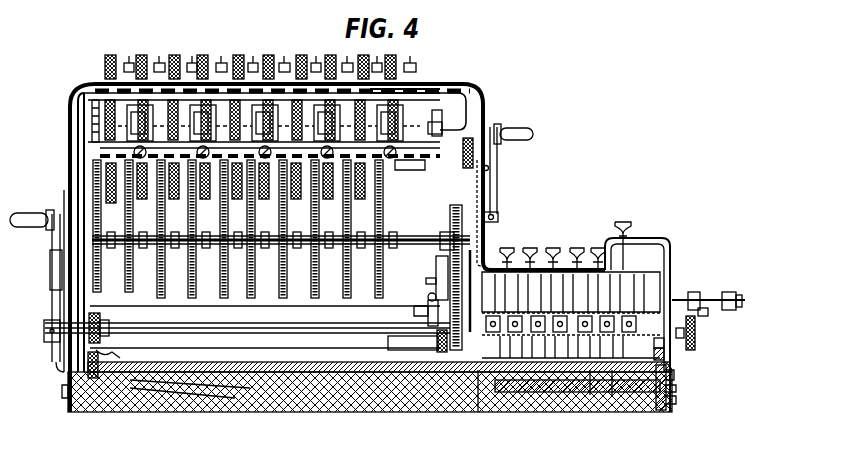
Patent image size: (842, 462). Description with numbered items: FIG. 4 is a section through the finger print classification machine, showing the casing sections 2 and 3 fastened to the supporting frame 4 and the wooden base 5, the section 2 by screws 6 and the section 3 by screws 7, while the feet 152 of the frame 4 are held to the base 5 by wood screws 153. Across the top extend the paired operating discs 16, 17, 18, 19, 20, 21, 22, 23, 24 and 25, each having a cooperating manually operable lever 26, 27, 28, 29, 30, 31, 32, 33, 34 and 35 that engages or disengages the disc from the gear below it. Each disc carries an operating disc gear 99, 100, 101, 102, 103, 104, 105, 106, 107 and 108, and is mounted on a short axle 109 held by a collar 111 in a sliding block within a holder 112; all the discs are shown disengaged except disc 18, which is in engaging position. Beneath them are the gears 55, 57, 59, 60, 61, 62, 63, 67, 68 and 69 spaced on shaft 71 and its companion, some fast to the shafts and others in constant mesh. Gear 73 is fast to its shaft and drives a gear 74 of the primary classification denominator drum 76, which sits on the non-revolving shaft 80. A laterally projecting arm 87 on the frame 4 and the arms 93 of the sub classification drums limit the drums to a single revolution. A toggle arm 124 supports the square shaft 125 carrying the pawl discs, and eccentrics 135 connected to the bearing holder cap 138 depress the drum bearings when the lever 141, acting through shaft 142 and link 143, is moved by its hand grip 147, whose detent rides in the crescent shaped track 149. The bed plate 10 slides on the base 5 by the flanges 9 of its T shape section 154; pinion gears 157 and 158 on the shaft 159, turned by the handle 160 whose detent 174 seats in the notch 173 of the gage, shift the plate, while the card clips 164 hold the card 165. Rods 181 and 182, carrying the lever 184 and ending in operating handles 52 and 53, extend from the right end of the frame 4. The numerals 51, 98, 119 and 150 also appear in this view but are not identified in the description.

The casing section 2 is at (467, 102).
The casing section 3 is at (670, 246).
The supporting frame 4 is at (478, 84).
The base 5 is at (276, 412).
The screws 6 is at (64, 392).
The screws 7 is at (678, 400).
The flanges 9 is at (678, 388).
The bed plate 10 is at (333, 372).
The operating disc 16 is at (110, 55).
The operating disc 17 is at (174, 55).
The operating disc 18 is at (238, 55).
The operating disc 19 is at (301, 55).
The operating disc 20 is at (366, 55).
The operating disc 21 is at (143, 55).
The operating disc 22 is at (203, 55).
The operating disc 23 is at (268, 55).
The operating disc 24 is at (334, 55).
The operating disc 25 is at (390, 55).
The manually operable lever 26 is at (130, 55).
The manually operable lever 27 is at (193, 55).
The operating lever 28 is at (253, 55).
The manually operable lever 29 is at (316, 55).
The manually operable lever 30 is at (376, 58).
The manually operable lever 31 is at (163, 55).
The manually operable lever 32 is at (225, 55).
The manually operable lever 33 is at (287, 55).
The manually operable lever 34 is at (351, 55).
The manually operable lever 35 is at (412, 66).
The gear 51 is at (696, 336).
The operating handle 52 is at (742, 302).
The operating handle 53 is at (706, 316).
The gear 55 is at (166, 242).
The gear 57 is at (283, 298).
The gear 59 is at (133, 270).
The gear 60 is at (192, 298).
The gear 61 is at (251, 298).
The gear 62 is at (315, 298).
The gear 63 is at (379, 298).
The gear 67 is at (101, 270).
The gear 68 is at (224, 298).
The gear 69 is at (347, 298).
The shaft 71 is at (420, 291).
The gear 73 is at (463, 234).
The gear 74 is at (446, 345).
The primary classification denominator drum 76 is at (478, 395).
The shaft 80 is at (414, 311).
The laterally projecting arm 87 is at (492, 392).
The arm 93 is at (592, 395).
The pin 98 is at (666, 345).
The operating disc gear 99 is at (96, 85).
The operating disc gear 100 is at (124, 190).
The operating disc gear 101 is at (155, 185).
The operating disc gear 102 is at (187, 185).
The operating disc gear 103 is at (219, 185).
The operating disc gear 104 is at (250, 185).
The operating disc gear 105 is at (280, 185).
The operating disc gear 106 is at (310, 185).
The operating disc gear 107 is at (342, 185).
The operating disc gear 108 is at (374, 185).
The short axle 109 is at (442, 128).
The collar 111 is at (452, 119).
The holder 112 is at (418, 170).
The key lever 119 is at (262, 129).
The toggle arm 124 is at (426, 281).
The square shaft 125 is at (566, 248).
The eccentric 135 is at (436, 266).
The bearing holder cap 138 is at (436, 89).
The lever 141 is at (498, 196).
The shaft 142 is at (498, 216).
The link 143 is at (440, 236).
The hand grip 147 is at (519, 133).
The crescent shaped track 149 is at (489, 168).
The knobs 150 is at (548, 248).
The feet 152 is at (676, 376).
The wood screws 153 is at (662, 410).
The T shape section 154 is at (672, 366).
The pinion gear 157 is at (666, 354).
The pinion gear 158 is at (100, 318).
The shaft 159 is at (298, 335).
The handle 160 is at (28, 213).
The card engaging clips 164 is at (118, 356).
The card 165 is at (201, 398).
The notch 173 is at (64, 195).
The detent 174 is at (54, 284).
The rod 181 is at (728, 292).
The rod 182 is at (692, 292).
The lever 184 is at (428, 297).